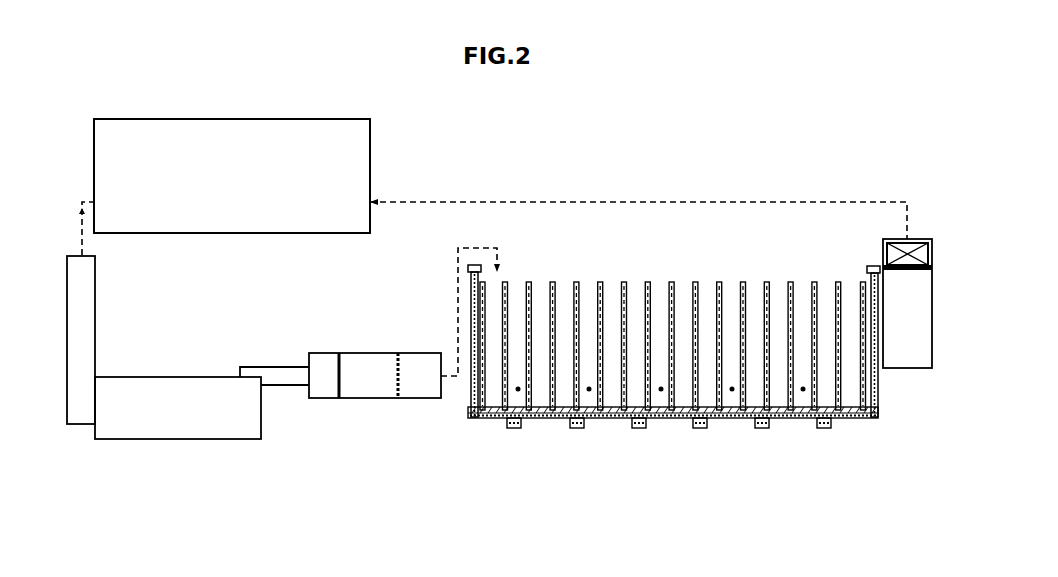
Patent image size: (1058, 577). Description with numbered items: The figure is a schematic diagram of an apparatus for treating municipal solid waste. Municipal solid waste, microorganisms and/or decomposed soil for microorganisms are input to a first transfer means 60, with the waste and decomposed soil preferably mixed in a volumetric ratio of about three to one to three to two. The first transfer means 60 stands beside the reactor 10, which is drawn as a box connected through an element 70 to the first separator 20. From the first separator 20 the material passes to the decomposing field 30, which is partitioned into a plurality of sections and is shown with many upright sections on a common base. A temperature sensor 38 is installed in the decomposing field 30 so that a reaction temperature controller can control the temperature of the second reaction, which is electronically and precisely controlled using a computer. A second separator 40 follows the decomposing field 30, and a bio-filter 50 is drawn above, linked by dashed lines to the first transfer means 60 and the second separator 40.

The reactor 10 is at (172, 436).
The first separator 20 is at (373, 392).
The decomposing field 30 is at (597, 267).
The temperature sensor 38 is at (803, 389).
The second separator 40 is at (908, 362).
The bio-filter 50 is at (360, 172).
The first transfer means 60 is at (87, 326).
The connecting rod 70 is at (290, 382).